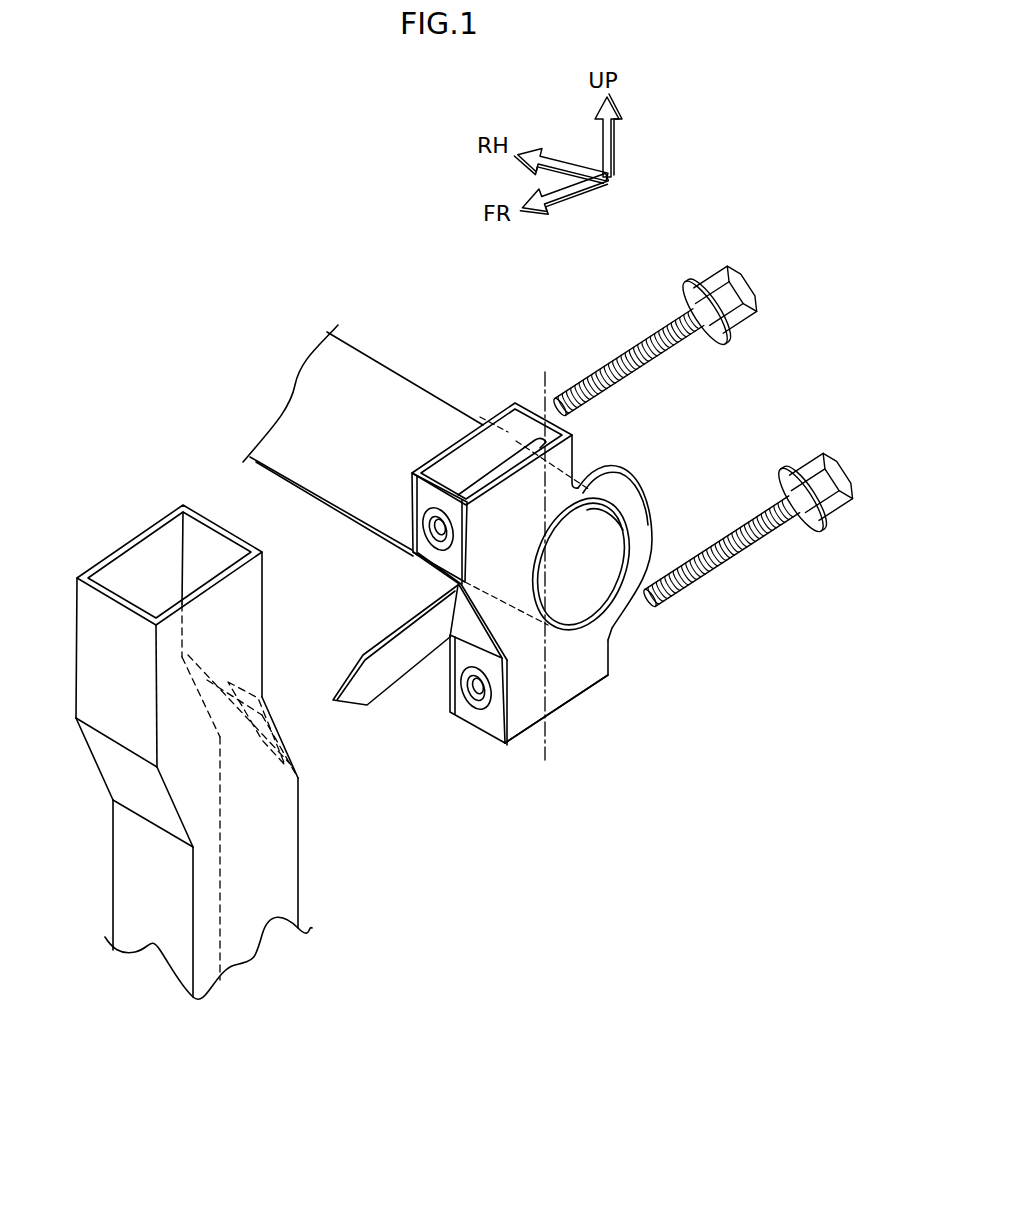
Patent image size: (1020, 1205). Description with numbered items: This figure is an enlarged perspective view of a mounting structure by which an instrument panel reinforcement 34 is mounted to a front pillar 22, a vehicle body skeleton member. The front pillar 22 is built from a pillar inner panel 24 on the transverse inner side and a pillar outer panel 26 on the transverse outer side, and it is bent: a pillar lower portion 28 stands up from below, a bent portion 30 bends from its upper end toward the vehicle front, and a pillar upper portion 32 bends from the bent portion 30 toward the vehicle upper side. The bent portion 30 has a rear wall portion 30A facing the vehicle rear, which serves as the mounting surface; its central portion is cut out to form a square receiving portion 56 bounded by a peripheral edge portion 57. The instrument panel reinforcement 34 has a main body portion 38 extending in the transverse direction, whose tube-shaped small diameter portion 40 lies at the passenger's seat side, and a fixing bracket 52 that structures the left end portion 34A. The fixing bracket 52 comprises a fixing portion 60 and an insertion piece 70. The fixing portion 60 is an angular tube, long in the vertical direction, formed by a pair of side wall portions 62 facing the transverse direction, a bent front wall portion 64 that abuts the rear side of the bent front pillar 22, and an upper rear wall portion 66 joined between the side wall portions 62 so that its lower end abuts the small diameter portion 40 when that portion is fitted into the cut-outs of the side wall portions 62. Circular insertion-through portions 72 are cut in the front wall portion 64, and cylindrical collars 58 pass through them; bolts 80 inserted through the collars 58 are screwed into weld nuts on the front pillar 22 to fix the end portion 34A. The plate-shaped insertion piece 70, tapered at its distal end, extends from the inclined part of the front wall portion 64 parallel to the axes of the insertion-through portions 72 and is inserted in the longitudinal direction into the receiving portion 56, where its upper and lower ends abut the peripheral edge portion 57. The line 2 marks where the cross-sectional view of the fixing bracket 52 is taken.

The line 2- 2 is at (552, 374).
The front pillar 22 is at (226, 763).
The pillar inner panel 24 is at (120, 547).
The pillar outer panel 26 is at (262, 920).
The pillar lower portion 28 is at (152, 928).
The bent portion 30 is at (145, 790).
The rear wall portion 30A is at (300, 763).
The pillar upper portion 32 is at (107, 697).
The instrument panel reinforcement 34 is at (521, 527).
The end portion 34A is at (449, 766).
The main body portion 38 is at (363, 413).
The small diameter portion 40 is at (344, 377).
The fixing bracket 52 is at (529, 571).
The receiving portion 56 is at (277, 738).
The peripheral edge portion 57 is at (232, 672).
The collar 58 is at (459, 571).
The fixing portion 60 is at (555, 571).
The side wall portion 62 is at (612, 525).
The front wall portion 64 is at (445, 577).
The upper rear wall portion 66 is at (583, 434).
The insertion piece 70 is at (410, 608).
The insertion-through portion 72 is at (447, 532).
The bolt 80 is at (731, 277).